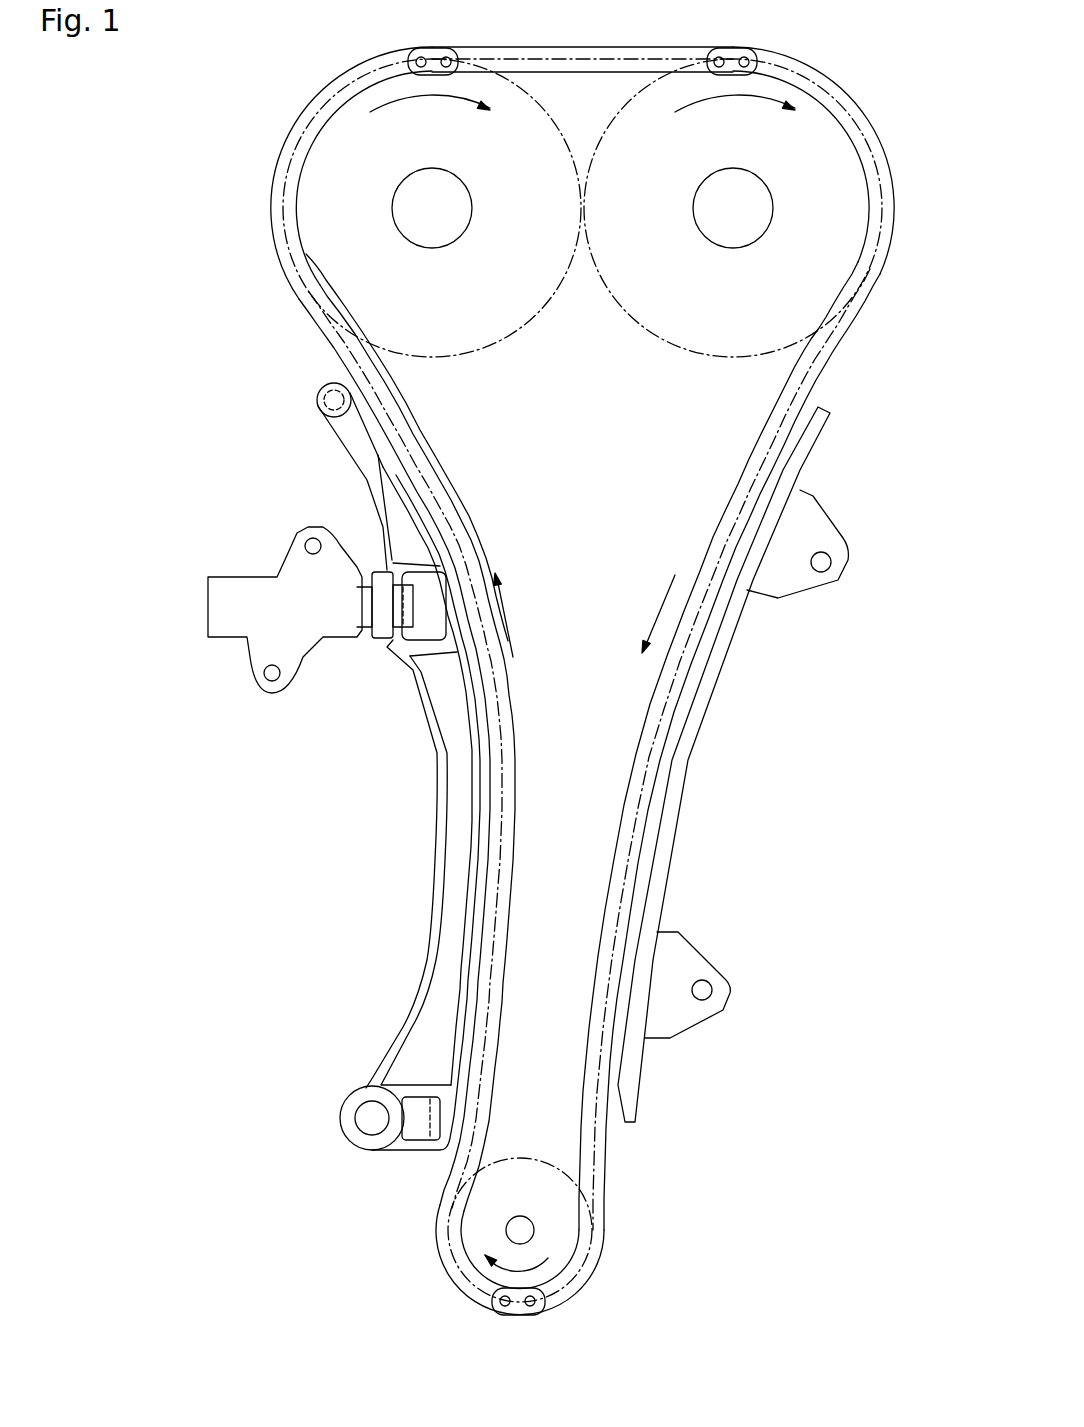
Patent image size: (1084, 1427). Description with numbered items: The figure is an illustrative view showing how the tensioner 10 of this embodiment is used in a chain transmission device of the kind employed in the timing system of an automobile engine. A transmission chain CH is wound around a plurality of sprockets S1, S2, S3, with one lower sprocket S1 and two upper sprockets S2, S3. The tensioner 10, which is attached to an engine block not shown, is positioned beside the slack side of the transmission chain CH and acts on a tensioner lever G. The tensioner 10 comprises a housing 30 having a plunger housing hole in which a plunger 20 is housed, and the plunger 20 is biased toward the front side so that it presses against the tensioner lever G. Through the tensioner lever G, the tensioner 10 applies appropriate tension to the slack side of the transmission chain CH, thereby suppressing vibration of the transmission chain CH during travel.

The tensioner 10 is at (175, 518).
The plunger 20 is at (373, 623).
The housing 30 is at (238, 608).
The tensioner lever G is at (445, 991).
The transmission chain CH is at (815, 358).
The sprocket S1 is at (557, 1230).
The sprocket S2 is at (330, 203).
The sprocket S3 is at (820, 186).